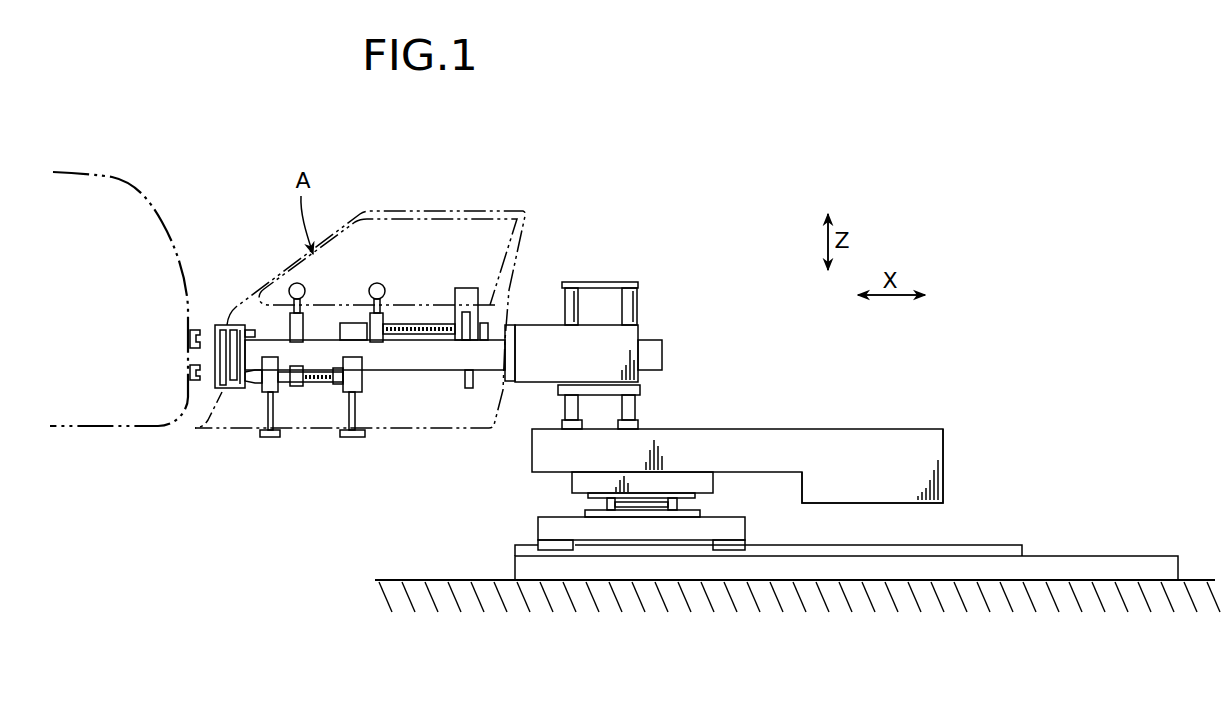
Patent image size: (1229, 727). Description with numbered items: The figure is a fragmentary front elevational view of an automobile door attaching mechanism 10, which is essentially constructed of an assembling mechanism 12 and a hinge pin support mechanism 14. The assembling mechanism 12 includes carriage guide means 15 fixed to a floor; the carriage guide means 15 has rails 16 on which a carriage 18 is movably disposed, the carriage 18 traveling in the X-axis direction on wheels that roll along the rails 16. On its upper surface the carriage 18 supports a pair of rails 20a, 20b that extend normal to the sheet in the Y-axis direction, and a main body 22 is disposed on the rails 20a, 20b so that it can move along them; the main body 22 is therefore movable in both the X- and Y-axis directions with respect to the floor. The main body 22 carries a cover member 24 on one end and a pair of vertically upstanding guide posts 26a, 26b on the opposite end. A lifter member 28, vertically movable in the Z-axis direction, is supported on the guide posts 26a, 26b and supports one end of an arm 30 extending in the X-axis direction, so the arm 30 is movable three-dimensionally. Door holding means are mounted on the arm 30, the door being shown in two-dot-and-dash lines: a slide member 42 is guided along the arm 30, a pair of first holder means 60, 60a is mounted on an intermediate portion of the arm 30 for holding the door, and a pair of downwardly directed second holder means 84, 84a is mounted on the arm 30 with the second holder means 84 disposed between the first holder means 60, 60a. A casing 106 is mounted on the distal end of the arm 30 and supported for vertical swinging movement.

The automobile door attaching mechanism 10 is at (772, 170).
The assembling mechanism 12 is at (616, 222).
The hinge pin support mechanism 14 is at (198, 295).
The carriage guide means 15 is at (1090, 555).
The rails 16 is at (989, 548).
The carriage 18 is at (735, 531).
The rail 20a is at (680, 505).
The rail 20b is at (585, 510).
The main body 22 is at (770, 413).
The cover member 24 is at (945, 442).
The guide post 26a is at (632, 305).
The guide post 26b is at (570, 285).
The lifter member 28 is at (610, 345).
The arm 30 is at (454, 371).
The slide member 42 is at (487, 310).
The first holder means 60 is at (390, 276).
The first holder means 60a is at (313, 277).
The second holder means 84 is at (357, 441).
The second holder means 84a is at (269, 441).
The casing 106 is at (222, 394).